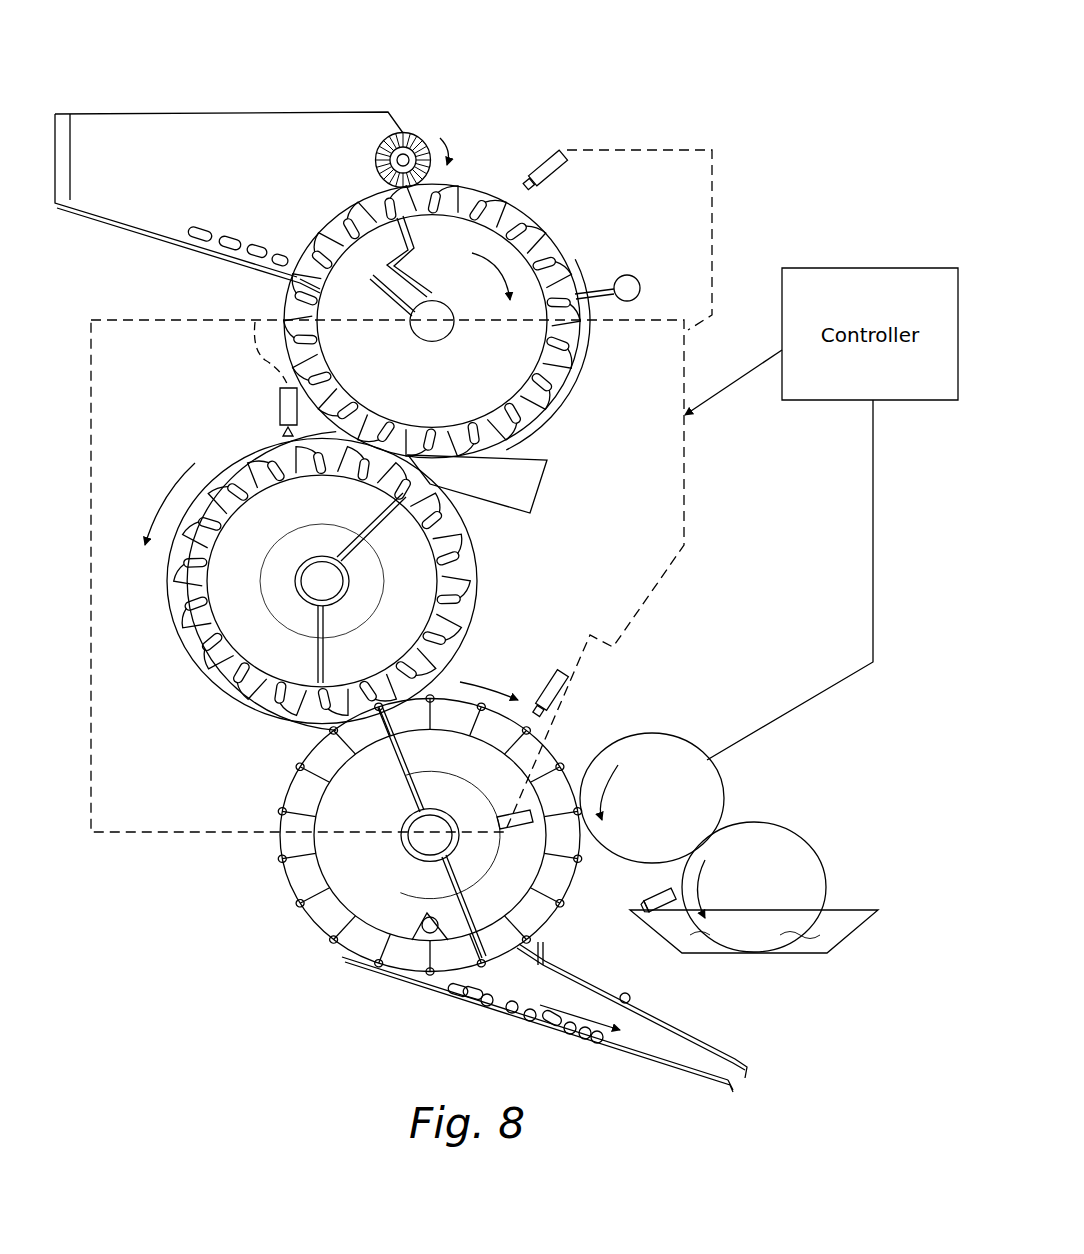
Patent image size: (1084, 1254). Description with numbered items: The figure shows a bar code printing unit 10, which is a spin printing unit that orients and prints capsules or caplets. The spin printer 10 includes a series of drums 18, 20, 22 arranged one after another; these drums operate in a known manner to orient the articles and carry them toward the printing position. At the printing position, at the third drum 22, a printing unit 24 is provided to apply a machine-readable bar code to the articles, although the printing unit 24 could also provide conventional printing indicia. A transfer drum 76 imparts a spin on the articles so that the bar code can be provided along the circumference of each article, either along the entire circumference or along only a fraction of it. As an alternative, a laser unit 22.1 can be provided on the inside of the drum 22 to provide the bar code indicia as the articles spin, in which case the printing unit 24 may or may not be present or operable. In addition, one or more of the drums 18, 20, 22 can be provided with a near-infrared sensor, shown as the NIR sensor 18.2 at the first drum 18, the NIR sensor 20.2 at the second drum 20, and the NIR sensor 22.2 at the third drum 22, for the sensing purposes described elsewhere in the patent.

The bar code printing unit 10 is at (684, 100).
The drum 18 is at (230, 359).
The NIR sensor 18.2 is at (543, 153).
The drum 20 is at (117, 580).
The NIR sensor 20.2 is at (279, 401).
The drum 22 is at (203, 898).
The laser unit 22.1 is at (507, 855).
The NIR sensor 22.2 is at (548, 688).
The printing unit 24 is at (759, 858).
The transfer drum 76 is at (703, 842).